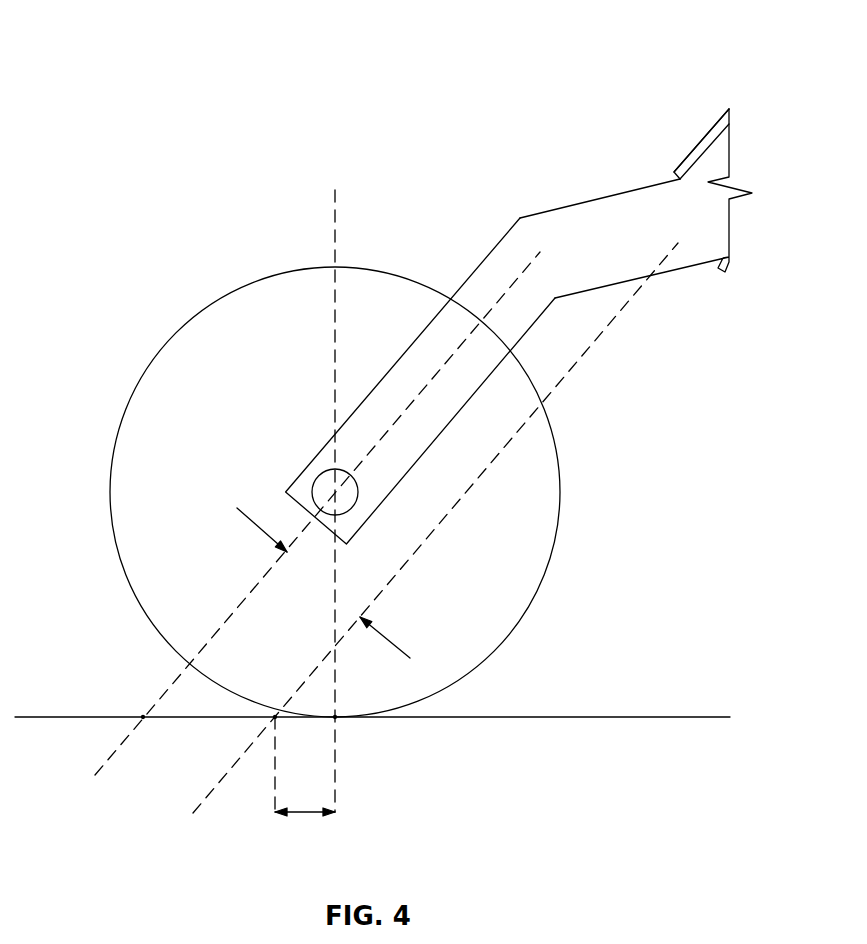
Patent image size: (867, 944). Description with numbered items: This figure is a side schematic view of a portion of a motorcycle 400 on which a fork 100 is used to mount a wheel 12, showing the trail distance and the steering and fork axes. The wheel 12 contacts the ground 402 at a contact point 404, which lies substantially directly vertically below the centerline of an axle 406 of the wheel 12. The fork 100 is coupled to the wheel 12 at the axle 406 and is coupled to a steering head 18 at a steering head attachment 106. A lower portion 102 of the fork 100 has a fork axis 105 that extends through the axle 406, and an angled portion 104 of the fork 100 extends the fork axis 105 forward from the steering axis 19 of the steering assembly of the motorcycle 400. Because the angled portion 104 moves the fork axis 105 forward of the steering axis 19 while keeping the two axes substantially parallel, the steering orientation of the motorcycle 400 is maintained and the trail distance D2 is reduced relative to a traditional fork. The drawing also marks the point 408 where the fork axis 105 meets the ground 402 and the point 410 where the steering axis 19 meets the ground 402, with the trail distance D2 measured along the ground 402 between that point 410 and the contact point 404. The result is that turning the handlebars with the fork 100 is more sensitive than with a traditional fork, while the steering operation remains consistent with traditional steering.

The motorcycle 400 is at (422, 40).
The fork 100 is at (519, 311).
The wheel 12 is at (210, 305).
The lower portion 102 is at (432, 322).
The angled portion 104 is at (595, 198).
The steering head attachment 106 is at (718, 122).
The steering head 18 is at (698, 142).
The steering axis 19 is at (585, 352).
The axle 406 is at (358, 492).
The fork axis 105 is at (177, 677).
The intersection of tool axis with ground 408 is at (142, 715).
The contact point 404 is at (336, 718).
The intersection of cutting axis with ground 410 is at (276, 718).
The trail distance D2 is at (293, 813).
The ground 402 is at (617, 715).